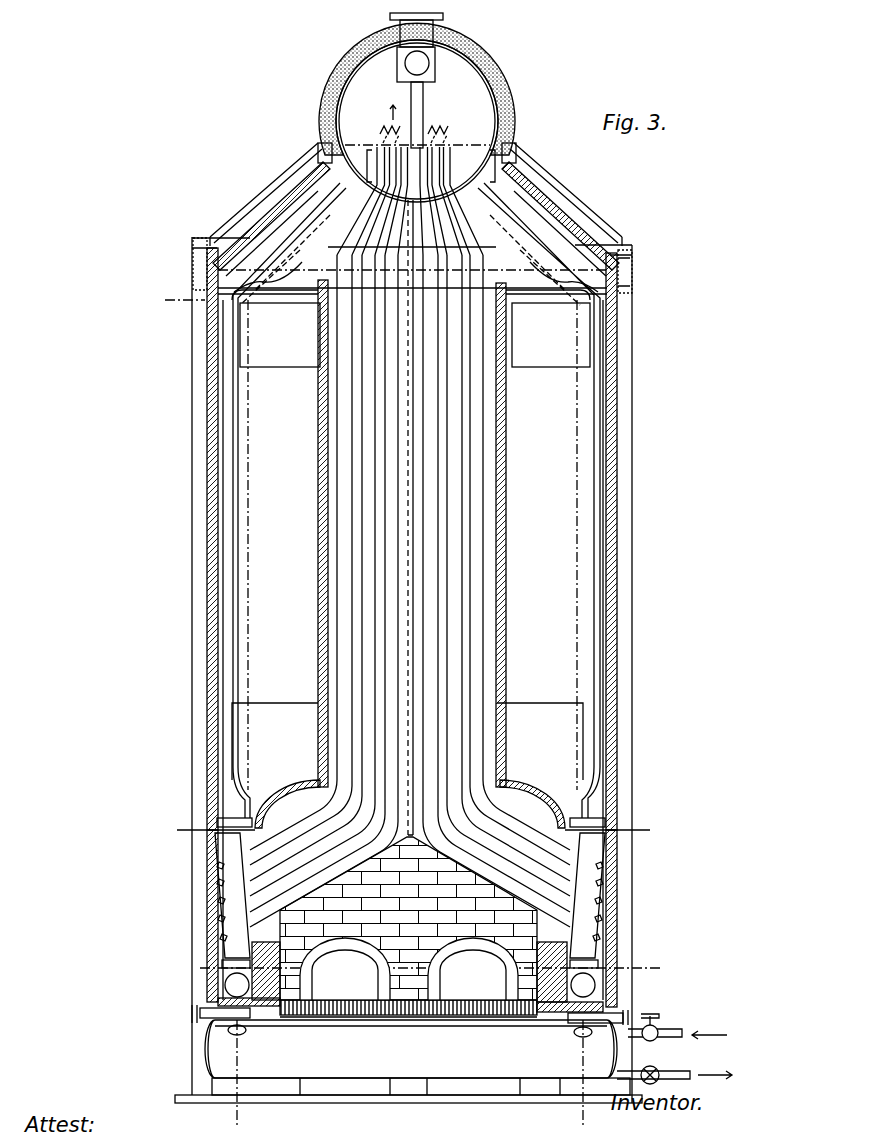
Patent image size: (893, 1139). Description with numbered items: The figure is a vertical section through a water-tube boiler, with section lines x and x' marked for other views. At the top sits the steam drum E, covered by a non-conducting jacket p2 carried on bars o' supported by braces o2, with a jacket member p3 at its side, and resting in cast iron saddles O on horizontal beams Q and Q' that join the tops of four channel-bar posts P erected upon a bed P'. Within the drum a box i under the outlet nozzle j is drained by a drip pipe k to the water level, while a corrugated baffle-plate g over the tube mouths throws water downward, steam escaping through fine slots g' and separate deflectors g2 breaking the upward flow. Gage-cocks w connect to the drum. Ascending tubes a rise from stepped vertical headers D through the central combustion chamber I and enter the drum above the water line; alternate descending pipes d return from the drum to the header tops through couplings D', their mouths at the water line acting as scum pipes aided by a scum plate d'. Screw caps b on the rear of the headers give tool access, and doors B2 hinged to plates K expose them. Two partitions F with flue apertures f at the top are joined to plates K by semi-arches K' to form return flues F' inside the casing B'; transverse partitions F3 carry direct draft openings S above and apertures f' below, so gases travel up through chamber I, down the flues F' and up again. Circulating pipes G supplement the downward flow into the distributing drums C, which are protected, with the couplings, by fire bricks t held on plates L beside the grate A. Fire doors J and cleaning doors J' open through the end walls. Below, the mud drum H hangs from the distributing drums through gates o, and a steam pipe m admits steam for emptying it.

The steam drum E is at (358, 74).
The non-conducting jacket p2 is at (507, 82).
The casing joint p3 is at (516, 138).
The outlet nozzle j is at (440, 18).
The box i is at (436, 78).
The drip pipe k is at (424, 116).
The baffle-plate g is at (401, 113).
The slots g' is at (387, 100).
The deflectors g2 is at (380, 133).
The gage-cocks w is at (467, 145).
The scum plate d' is at (468, 476).
The ascending water tubes a is at (430, 872).
The combustion chamber I is at (412, 587).
The section line x is at (406, 569).
The section line x' is at (416, 633).
The braces o2 is at (272, 197).
The bars o' is at (416, 181).
The cast iron saddles O is at (300, 234).
The horizontal beam Q is at (428, 283).
The horizontal beam Q' is at (643, 272).
The casing B' is at (415, 670).
The channel-bar posts P is at (413, 496).
The doors B2 is at (617, 928).
The descending tubes d is at (403, 500).
The flue apertures f is at (410, 260).
The return flues F' is at (413, 645).
The partitions F is at (522, 633).
The transverse partitions F3 is at (398, 396).
The circulating pipes G is at (412, 545).
The direct draft openings S is at (415, 335).
The apertures f' is at (407, 741).
The semi-arches K' is at (410, 792).
The plates K is at (410, 833).
The vertical headers D is at (409, 895).
The screw caps b is at (222, 936).
The header couplings D' is at (375, 966).
The distributing drum C is at (225, 990).
The hatched block t is at (275, 960).
The fire doors J is at (409, 969).
The cleaning doors J' is at (465, 889).
The grate A is at (425, 1017).
The plates L is at (200, 1015).
The gates o is at (380, 1041).
The mud drum H is at (205, 1052).
The bed P' is at (408, 1110).
The steam pipe m is at (672, 1028).